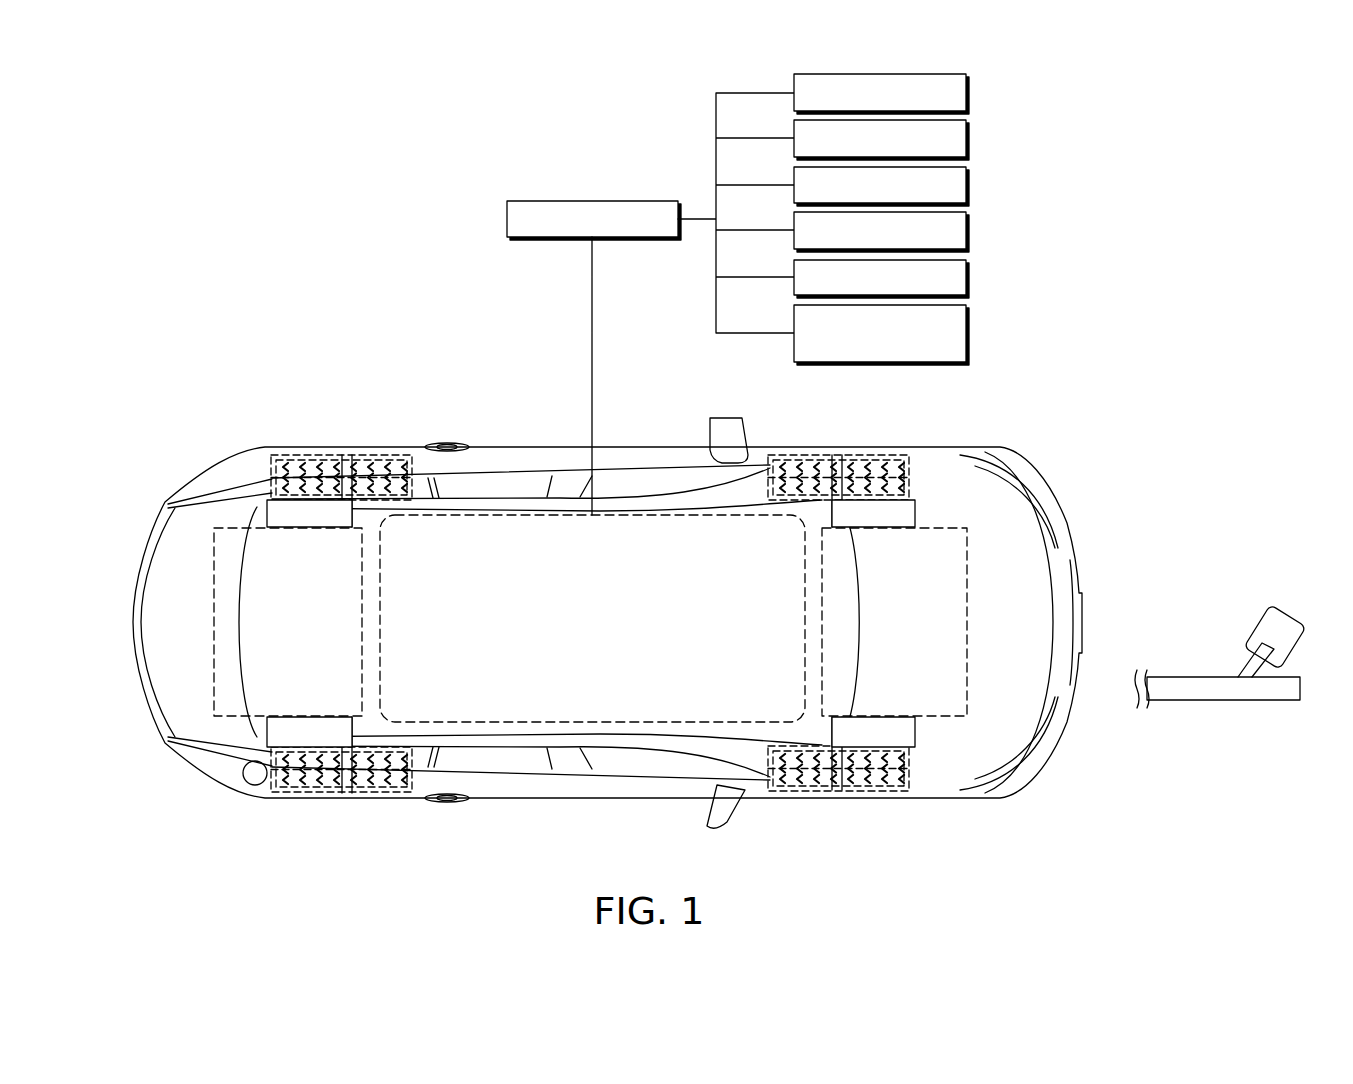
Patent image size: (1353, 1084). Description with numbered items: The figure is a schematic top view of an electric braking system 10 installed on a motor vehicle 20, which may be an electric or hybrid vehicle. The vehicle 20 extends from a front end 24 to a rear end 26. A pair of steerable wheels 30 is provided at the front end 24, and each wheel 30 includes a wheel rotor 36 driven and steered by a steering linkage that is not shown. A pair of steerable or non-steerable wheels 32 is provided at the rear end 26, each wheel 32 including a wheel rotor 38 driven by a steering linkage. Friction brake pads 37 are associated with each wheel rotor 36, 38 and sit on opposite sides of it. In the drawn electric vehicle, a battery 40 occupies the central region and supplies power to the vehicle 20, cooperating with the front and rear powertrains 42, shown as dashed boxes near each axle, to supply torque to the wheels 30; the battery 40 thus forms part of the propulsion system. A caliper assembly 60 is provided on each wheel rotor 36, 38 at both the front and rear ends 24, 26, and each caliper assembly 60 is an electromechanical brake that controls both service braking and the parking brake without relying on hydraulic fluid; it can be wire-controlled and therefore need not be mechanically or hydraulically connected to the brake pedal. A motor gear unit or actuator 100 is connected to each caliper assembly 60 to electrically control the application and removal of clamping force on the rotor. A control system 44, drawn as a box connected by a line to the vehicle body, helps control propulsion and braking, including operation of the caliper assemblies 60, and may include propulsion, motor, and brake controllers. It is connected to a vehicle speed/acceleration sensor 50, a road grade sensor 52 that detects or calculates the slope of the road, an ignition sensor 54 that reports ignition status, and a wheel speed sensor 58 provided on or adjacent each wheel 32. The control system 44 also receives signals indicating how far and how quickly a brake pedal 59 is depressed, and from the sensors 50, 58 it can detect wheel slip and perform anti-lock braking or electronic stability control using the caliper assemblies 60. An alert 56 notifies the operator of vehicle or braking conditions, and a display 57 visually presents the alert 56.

The electric braking system 10 is at (648, 607).
The motor vehicle 20 is at (507, 836).
The front end 24 is at (1100, 578).
The rear end 26 is at (232, 448).
The steerable wheels 30 is at (796, 785).
The wheels 32 is at (283, 790).
The wheel rotor 36 is at (855, 785).
The friction brake pads 37 is at (650, 620).
The wheel rotor 38 is at (362, 787).
The battery 40 is at (592, 618).
The powertrains 42 is at (590, 622).
The control system 44 is at (507, 218).
The vehicle speed/acceleration sensor 50 is at (969, 139).
The road grade sensor 52 is at (969, 185).
The ignition sensor 54 is at (969, 231).
The alert 56 is at (969, 277).
The display 57 is at (969, 93).
The wheel speed sensor 58 is at (969, 333).
The brake pedal 59 is at (1227, 702).
The caliper assembly 60 is at (595, 622).
The actuator 100 is at (266, 502).